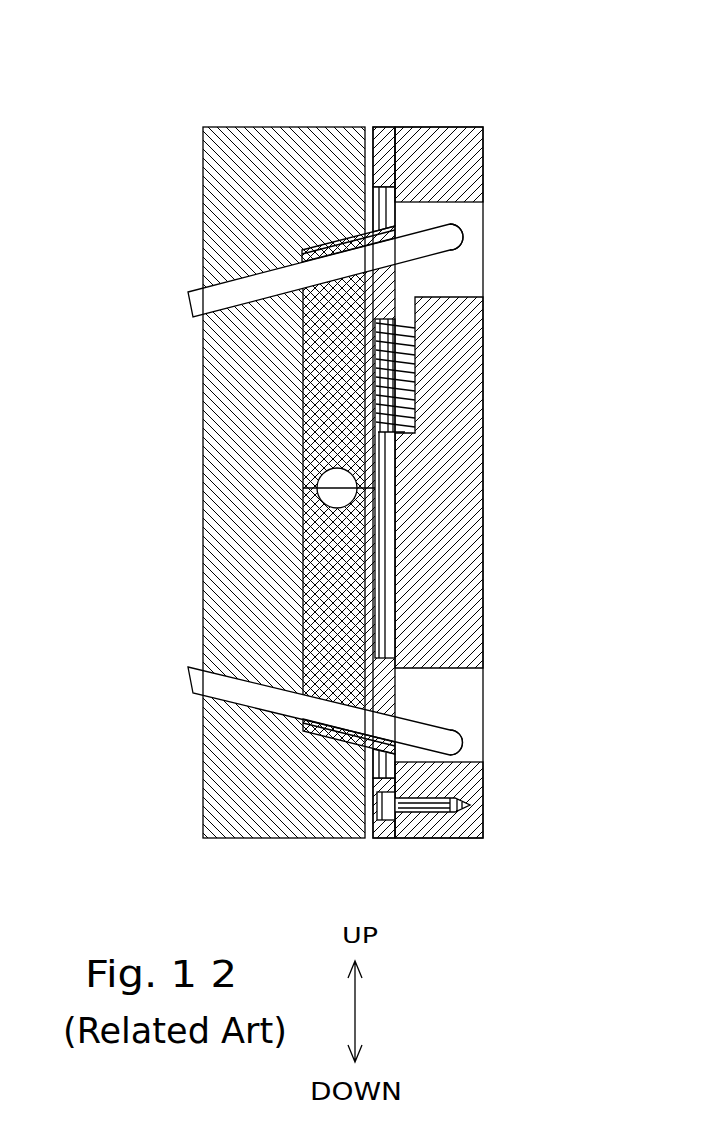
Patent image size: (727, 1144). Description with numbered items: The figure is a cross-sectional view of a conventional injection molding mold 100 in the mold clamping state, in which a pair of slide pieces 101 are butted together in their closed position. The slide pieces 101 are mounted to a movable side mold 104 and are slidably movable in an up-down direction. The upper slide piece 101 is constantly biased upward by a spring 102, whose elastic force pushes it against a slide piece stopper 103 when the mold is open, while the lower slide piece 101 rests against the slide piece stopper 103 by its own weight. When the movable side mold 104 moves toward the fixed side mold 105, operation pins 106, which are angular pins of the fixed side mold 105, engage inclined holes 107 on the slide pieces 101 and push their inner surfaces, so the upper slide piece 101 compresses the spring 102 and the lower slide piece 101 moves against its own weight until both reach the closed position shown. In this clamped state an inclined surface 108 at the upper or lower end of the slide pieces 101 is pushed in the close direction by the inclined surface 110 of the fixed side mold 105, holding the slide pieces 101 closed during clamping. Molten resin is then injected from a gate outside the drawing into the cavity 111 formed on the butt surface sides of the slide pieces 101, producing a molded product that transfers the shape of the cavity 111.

The injection molding mold 100 is at (479, 105).
The slide piece 101 is at (327, 383).
The spring 102 is at (440, 303).
The slide piece stopper 103 is at (382, 838).
The movable side mold 104 is at (405, 112).
The fixed side mold 105 is at (207, 115).
The operation pin 106 is at (445, 238).
The inclined hole 107 is at (443, 192).
The inclined surface 108 is at (343, 248).
The inclined surface 110 is at (273, 285).
The cavity 111 is at (330, 481).